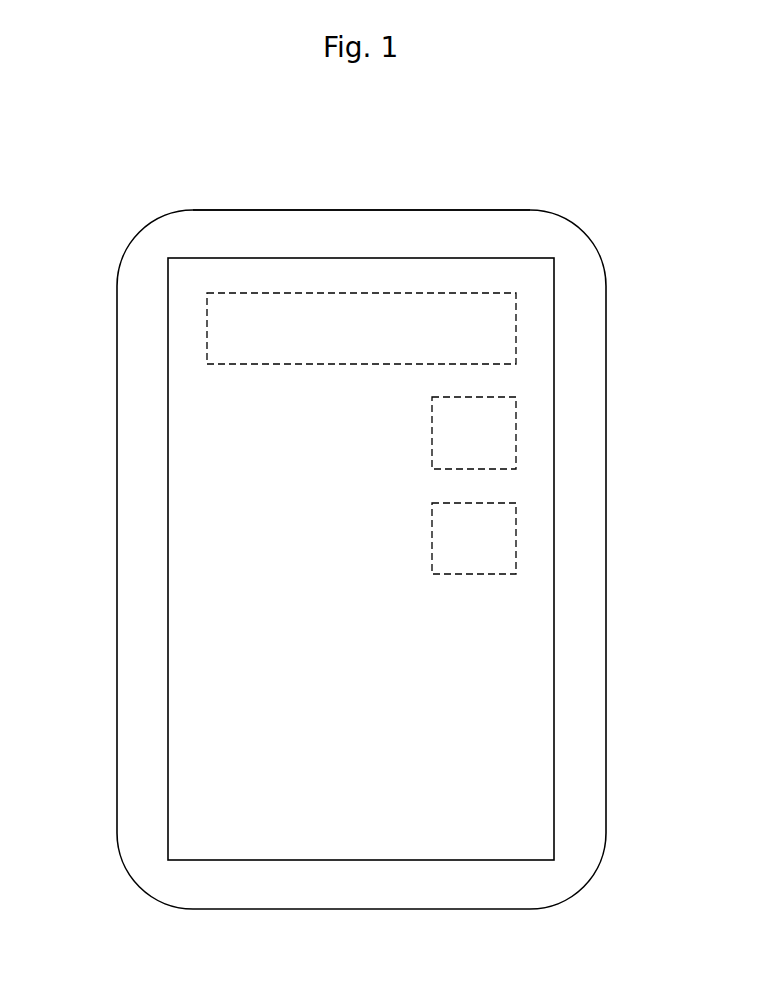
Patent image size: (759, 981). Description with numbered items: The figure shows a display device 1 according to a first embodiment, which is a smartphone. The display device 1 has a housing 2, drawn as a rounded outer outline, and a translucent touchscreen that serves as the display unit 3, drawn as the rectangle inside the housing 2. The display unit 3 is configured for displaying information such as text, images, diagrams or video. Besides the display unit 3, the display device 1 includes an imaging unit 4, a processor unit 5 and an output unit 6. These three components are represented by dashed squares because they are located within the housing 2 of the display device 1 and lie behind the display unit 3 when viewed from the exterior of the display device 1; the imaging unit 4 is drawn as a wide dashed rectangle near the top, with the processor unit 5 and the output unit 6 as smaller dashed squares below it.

The display device 1 is at (597, 200).
The housing 2 is at (367, 209).
The display unit 3 is at (554, 284).
The imaging unit 4 is at (516, 357).
The processor unit 5 is at (516, 441).
The output unit 6 is at (516, 537).